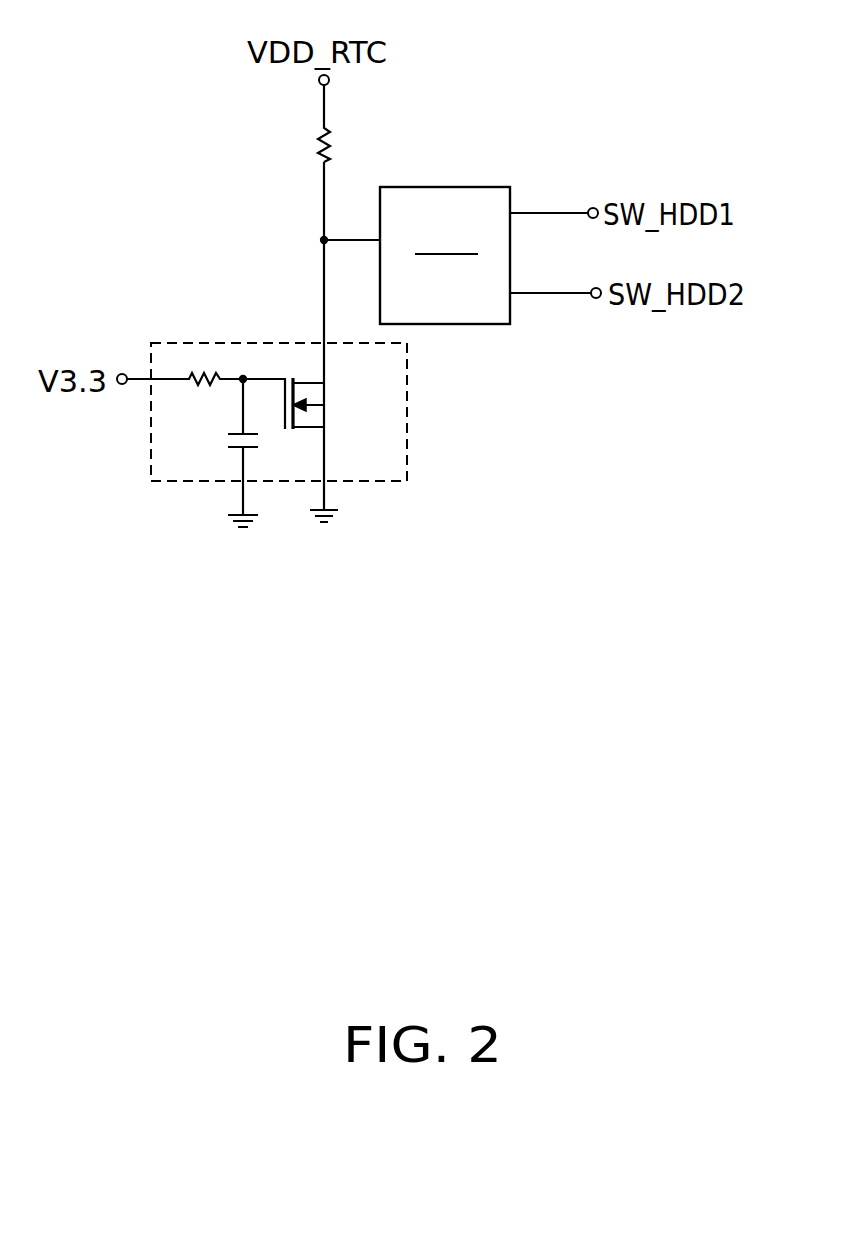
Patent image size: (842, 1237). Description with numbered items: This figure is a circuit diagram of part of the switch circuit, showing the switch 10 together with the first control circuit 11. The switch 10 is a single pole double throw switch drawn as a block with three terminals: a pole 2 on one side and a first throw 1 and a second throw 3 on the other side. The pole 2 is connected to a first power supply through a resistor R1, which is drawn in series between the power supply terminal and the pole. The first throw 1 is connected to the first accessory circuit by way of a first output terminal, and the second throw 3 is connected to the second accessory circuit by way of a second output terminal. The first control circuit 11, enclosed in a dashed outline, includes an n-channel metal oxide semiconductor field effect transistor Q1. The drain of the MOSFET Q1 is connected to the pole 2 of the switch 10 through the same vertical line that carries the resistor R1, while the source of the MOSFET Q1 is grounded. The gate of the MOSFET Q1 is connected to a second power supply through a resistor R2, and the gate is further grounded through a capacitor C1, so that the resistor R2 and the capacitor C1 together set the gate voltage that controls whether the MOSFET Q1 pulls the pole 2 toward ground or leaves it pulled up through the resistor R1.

The switch 10 is at (485, 229).
The first control circuit 11 is at (320, 435).
The first throw 1 is at (538, 217).
The pole 2 is at (435, 241).
The second throw 3 is at (538, 294).
The resistor R1 is at (343, 144).
The resistor R2 is at (214, 364).
The capacitor C1 is at (223, 447).
The n-channel metal oxide semiconductor field effect transistor Q1 is at (305, 403).